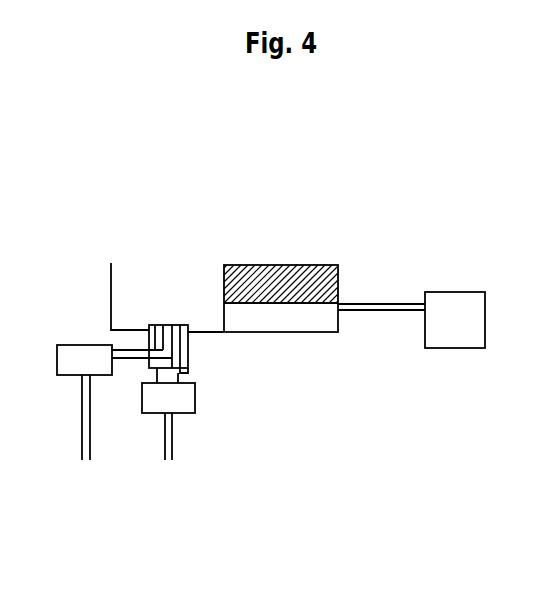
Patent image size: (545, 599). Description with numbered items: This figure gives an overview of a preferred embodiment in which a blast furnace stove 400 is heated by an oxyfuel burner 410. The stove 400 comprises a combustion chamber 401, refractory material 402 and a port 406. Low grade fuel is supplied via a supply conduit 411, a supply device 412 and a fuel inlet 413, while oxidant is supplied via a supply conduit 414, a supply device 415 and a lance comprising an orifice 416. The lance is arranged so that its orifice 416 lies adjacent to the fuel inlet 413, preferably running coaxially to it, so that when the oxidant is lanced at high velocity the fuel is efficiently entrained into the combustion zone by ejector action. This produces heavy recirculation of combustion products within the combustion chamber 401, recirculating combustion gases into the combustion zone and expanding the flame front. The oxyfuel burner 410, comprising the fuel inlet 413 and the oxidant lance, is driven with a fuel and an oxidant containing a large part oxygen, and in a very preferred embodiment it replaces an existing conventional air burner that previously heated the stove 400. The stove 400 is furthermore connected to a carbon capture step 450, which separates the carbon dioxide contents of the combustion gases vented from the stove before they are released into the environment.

The blast furnace stove 400 is at (408, 410).
The combustion chamber 401 is at (127, 273).
The refractory material 402 is at (307, 264).
The port 406 is at (352, 304).
The oxyfuel burner 410 is at (167, 322).
The supply conduit 411 is at (173, 445).
The supply device 412 is at (195, 398).
The fuel inlet 413 is at (176, 322).
The supply conduit 414 is at (88, 433).
The supply device 415 is at (97, 377).
The orifice 416 is at (167, 322).
The carbon capture step 450 is at (457, 292).